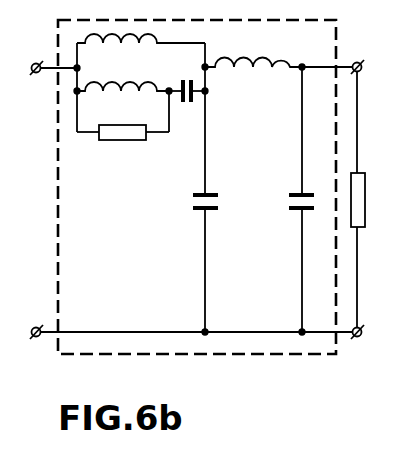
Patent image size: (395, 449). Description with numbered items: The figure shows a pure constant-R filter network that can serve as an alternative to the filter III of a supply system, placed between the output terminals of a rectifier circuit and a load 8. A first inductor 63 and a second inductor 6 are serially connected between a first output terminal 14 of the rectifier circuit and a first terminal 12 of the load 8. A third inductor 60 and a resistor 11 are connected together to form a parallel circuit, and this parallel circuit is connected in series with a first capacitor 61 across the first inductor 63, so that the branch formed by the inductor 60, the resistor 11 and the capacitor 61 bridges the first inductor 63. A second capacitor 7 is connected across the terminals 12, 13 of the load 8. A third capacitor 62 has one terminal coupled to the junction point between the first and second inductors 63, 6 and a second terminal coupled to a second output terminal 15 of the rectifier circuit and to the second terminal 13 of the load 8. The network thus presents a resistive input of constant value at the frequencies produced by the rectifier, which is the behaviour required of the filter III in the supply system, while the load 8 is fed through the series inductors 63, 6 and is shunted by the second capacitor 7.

The second inductor 6 is at (246, 62).
The second capacitor 7 is at (296, 214).
The load 8 is at (351, 225).
The resistor 11 is at (120, 140).
The first terminal of the load 12 is at (354, 62).
The second terminal of the load 13 is at (358, 337).
The first output terminal of the rectifier circuit 14 is at (34, 63).
The second output terminal of the rectifier circuit 15 is at (37, 337).
The third inductor 60 is at (111, 91).
The first capacitor 61 is at (190, 104).
The third capacitor 62 is at (200, 212).
The first inductor 63 is at (127, 44).
The filter III is at (145, 356).